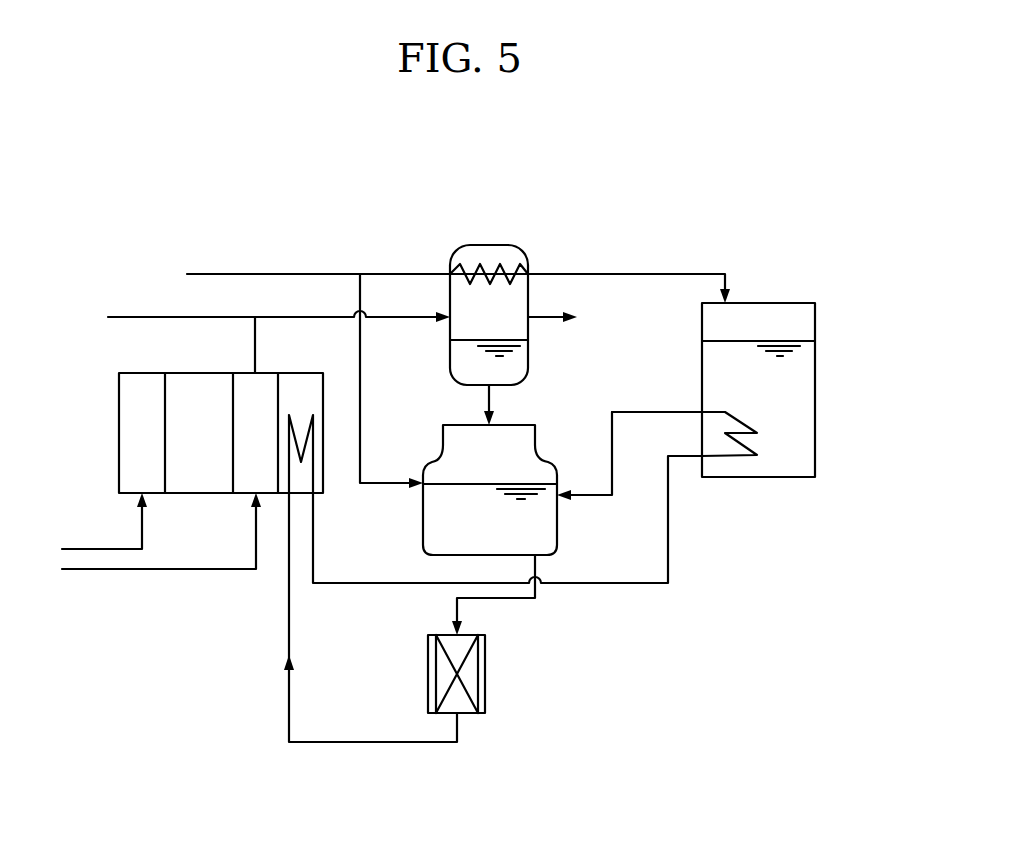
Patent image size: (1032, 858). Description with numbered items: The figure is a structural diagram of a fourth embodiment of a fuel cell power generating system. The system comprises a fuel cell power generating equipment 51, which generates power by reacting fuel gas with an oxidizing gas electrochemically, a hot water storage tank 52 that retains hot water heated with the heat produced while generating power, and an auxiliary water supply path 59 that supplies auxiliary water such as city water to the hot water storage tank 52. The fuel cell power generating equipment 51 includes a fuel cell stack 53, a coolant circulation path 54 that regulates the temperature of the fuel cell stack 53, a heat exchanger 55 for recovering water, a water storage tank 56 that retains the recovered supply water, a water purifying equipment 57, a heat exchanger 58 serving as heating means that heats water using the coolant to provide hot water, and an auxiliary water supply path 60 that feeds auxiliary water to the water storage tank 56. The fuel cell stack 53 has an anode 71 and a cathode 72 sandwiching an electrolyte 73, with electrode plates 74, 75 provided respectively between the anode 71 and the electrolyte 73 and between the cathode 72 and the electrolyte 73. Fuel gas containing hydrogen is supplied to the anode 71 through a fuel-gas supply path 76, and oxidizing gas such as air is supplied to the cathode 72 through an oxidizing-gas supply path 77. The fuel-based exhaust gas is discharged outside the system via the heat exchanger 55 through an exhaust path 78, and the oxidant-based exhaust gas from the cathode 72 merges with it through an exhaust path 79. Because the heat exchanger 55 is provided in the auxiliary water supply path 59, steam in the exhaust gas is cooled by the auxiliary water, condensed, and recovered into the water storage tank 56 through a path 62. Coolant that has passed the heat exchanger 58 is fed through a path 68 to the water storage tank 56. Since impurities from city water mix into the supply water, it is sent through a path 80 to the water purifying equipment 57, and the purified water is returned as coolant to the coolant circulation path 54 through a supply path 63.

The fuel cell power generating equipment 51 is at (446, 203).
The hot water storage tank 52 is at (816, 402).
The fuel cell stack 53 is at (110, 373).
The coolant circulation path 54 is at (312, 455).
The heat exchanger for recovering water 55 is at (528, 372).
The water storage tank 56 is at (558, 528).
The water purifying equipment 57 is at (487, 670).
The heat exchanger 58 is at (737, 460).
The auxiliary water supply path 59 is at (258, 273).
The auxiliary water supply path 60 is at (378, 487).
The path 62 is at (470, 397).
The supply path 63 is at (340, 741).
The path 68 is at (657, 410).
The anode 71 is at (143, 372).
The cathode 72 is at (243, 372).
The electrolyte 73 is at (196, 372).
The electrode plate 74 is at (160, 402).
The electrode plate 75 is at (234, 395).
The fuel-gas supply path 76 is at (110, 547).
The oxidizing-gas supply path 77 is at (106, 571).
The exhaust path 78 is at (140, 316).
The exhaust path 79 is at (256, 330).
The path 80 is at (538, 588).